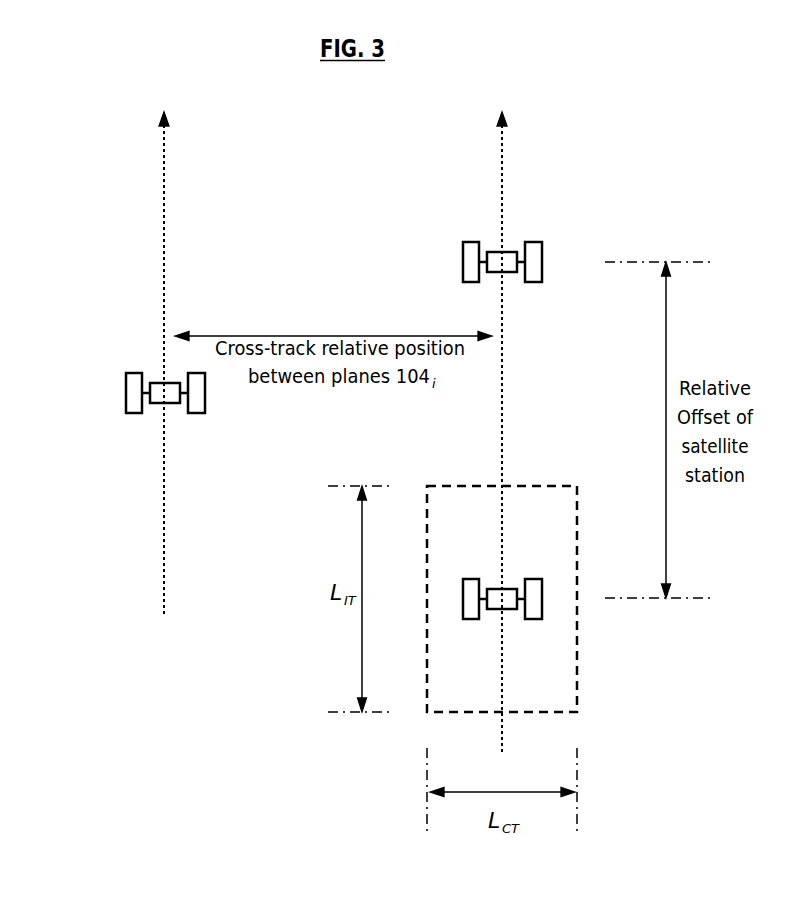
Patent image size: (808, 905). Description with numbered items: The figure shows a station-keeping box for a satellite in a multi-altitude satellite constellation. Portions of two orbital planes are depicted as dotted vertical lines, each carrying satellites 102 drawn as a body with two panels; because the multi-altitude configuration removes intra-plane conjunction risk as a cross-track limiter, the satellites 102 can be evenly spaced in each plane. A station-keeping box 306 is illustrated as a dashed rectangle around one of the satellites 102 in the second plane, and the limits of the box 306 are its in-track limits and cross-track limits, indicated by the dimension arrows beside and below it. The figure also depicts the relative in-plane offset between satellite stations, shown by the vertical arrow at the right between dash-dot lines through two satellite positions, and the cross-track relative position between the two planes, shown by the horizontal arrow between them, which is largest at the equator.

The satellite 102 is at (128, 390).
The station-keeping box 306 is at (535, 486).